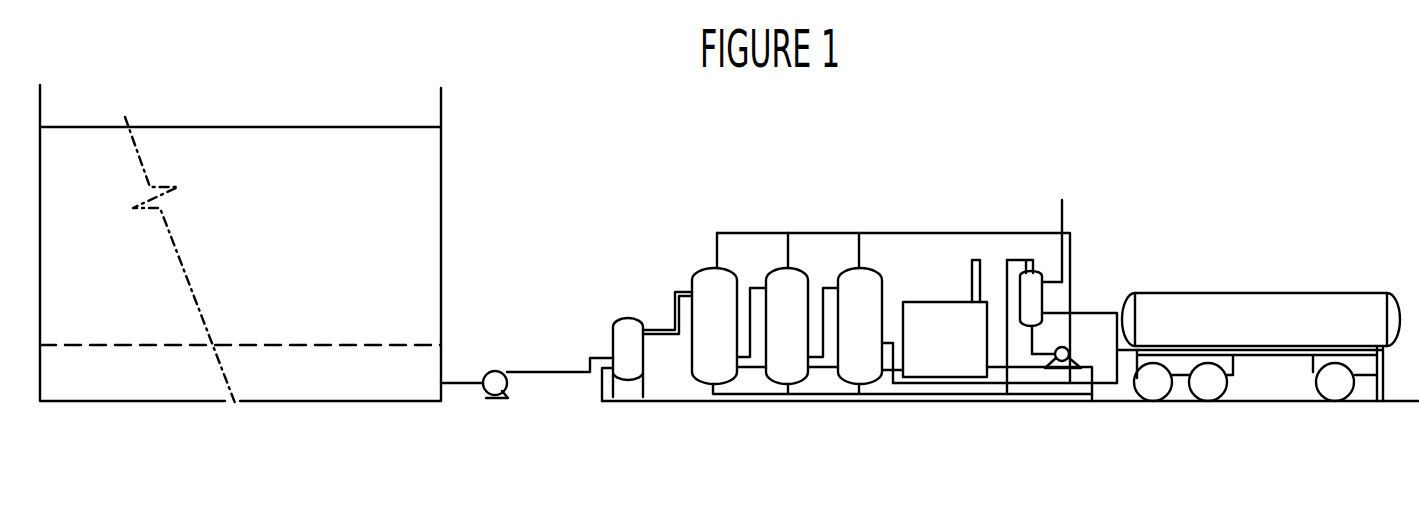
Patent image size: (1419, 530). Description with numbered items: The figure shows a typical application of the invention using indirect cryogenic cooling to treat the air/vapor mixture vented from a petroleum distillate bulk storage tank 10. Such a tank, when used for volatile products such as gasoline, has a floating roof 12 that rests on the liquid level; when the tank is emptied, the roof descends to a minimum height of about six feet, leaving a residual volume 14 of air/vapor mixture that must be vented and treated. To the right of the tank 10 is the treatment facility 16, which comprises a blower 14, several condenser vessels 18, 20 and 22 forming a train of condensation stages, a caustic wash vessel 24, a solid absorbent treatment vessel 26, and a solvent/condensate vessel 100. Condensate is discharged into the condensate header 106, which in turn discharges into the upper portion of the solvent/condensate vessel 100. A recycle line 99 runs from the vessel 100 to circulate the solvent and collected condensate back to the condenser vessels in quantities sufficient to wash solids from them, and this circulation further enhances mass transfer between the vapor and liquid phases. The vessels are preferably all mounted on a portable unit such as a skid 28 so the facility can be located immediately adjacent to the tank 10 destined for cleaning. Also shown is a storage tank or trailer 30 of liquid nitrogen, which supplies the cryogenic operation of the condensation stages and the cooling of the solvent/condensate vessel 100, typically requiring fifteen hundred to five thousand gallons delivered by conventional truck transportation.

The bulk storage tank 10 is at (413, 160).
The floating roof 12 is at (353, 350).
The residual volume / blower 14 is at (489, 385).
The treatment facility 16 is at (635, 205).
The condenser vessel 18 is at (708, 275).
The condenser vessel 20 is at (792, 290).
The condenser vessel 22 is at (872, 280).
The caustic wash vessel 24 is at (575, 318).
The solid absorbent treatment vessel 26 is at (945, 318).
The skid 28 is at (917, 387).
The liquid nitrogen storage tank (trailer) 30 is at (1187, 315).
The recycle line 99 is at (1072, 285).
The solvent/condensate vessel 100 is at (1032, 293).
The condensate header 106 is at (807, 397).